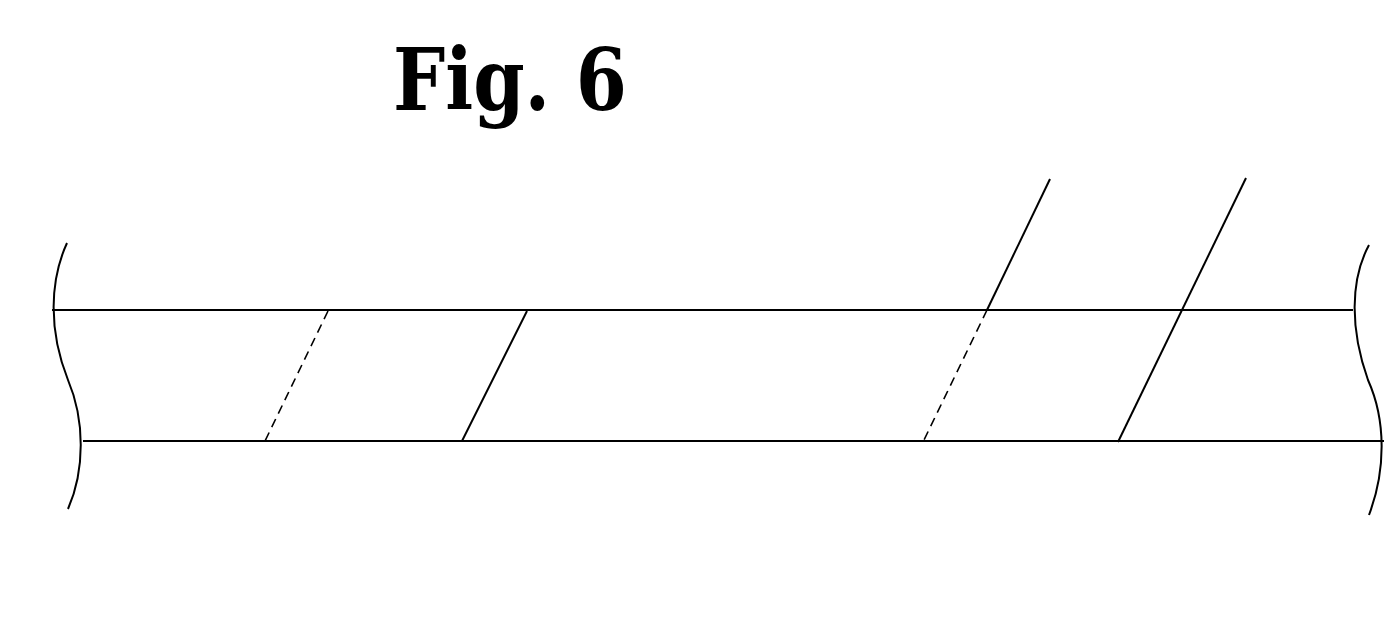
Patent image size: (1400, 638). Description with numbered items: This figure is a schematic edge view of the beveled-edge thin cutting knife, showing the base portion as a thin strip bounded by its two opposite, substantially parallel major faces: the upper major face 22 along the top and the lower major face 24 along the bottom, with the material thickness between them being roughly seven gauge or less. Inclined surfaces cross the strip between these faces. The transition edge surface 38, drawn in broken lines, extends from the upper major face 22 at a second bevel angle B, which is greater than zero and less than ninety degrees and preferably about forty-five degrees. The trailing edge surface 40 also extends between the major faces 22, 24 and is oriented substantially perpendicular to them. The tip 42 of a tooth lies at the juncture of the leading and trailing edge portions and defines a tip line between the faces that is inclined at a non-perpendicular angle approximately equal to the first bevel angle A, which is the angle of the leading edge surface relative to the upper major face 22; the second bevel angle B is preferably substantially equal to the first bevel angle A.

The upper major face 22 is at (642, 310).
The lower major face 24 is at (723, 441).
The transition edge surface 38 is at (298, 376).
The trailing edge surface 40 is at (133, 360).
The tip 42 is at (497, 377).
The first bevel angle A is at (1243, 216).
The second bevel angle B is at (1046, 216).